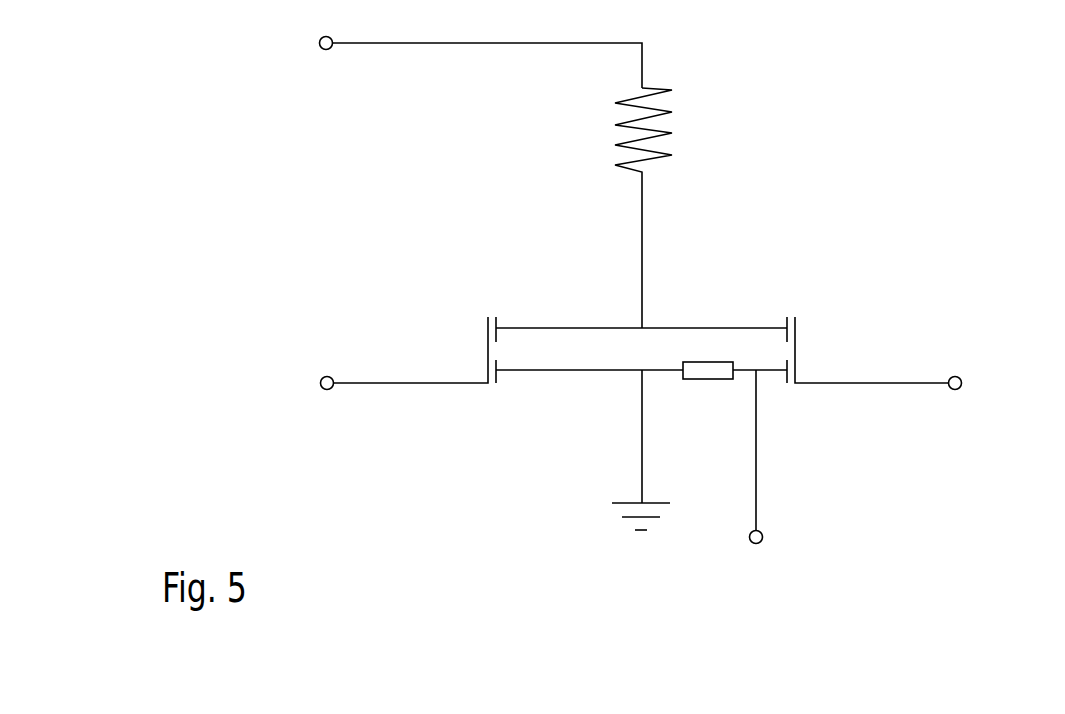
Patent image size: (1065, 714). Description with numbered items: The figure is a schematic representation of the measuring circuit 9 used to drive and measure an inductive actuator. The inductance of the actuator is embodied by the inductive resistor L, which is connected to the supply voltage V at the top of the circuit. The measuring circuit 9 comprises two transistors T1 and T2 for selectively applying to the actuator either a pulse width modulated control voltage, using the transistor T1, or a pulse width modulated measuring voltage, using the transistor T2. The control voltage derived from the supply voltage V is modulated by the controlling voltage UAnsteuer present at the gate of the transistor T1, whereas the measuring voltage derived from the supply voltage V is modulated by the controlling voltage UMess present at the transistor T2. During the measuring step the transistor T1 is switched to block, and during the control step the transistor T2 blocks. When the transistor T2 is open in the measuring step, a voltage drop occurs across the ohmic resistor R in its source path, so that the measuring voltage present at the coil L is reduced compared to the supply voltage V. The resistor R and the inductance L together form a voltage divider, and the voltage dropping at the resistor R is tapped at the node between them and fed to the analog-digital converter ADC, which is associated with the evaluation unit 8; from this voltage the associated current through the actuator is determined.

The evaluation unit 8 is at (812, 547).
The measuring circuit 9 is at (760, 199).
The supply voltage V is at (471, 57).
The inductive resistor L is at (660, 88).
The ohmic resistor R is at (708, 388).
The transistor T1 is at (415, 350).
The transistor T2 is at (868, 350).
The analog-digital converter ADC is at (756, 474).
The controlling voltage UAnsteuer is at (280, 384).
The controlling voltage UMess is at (988, 389).